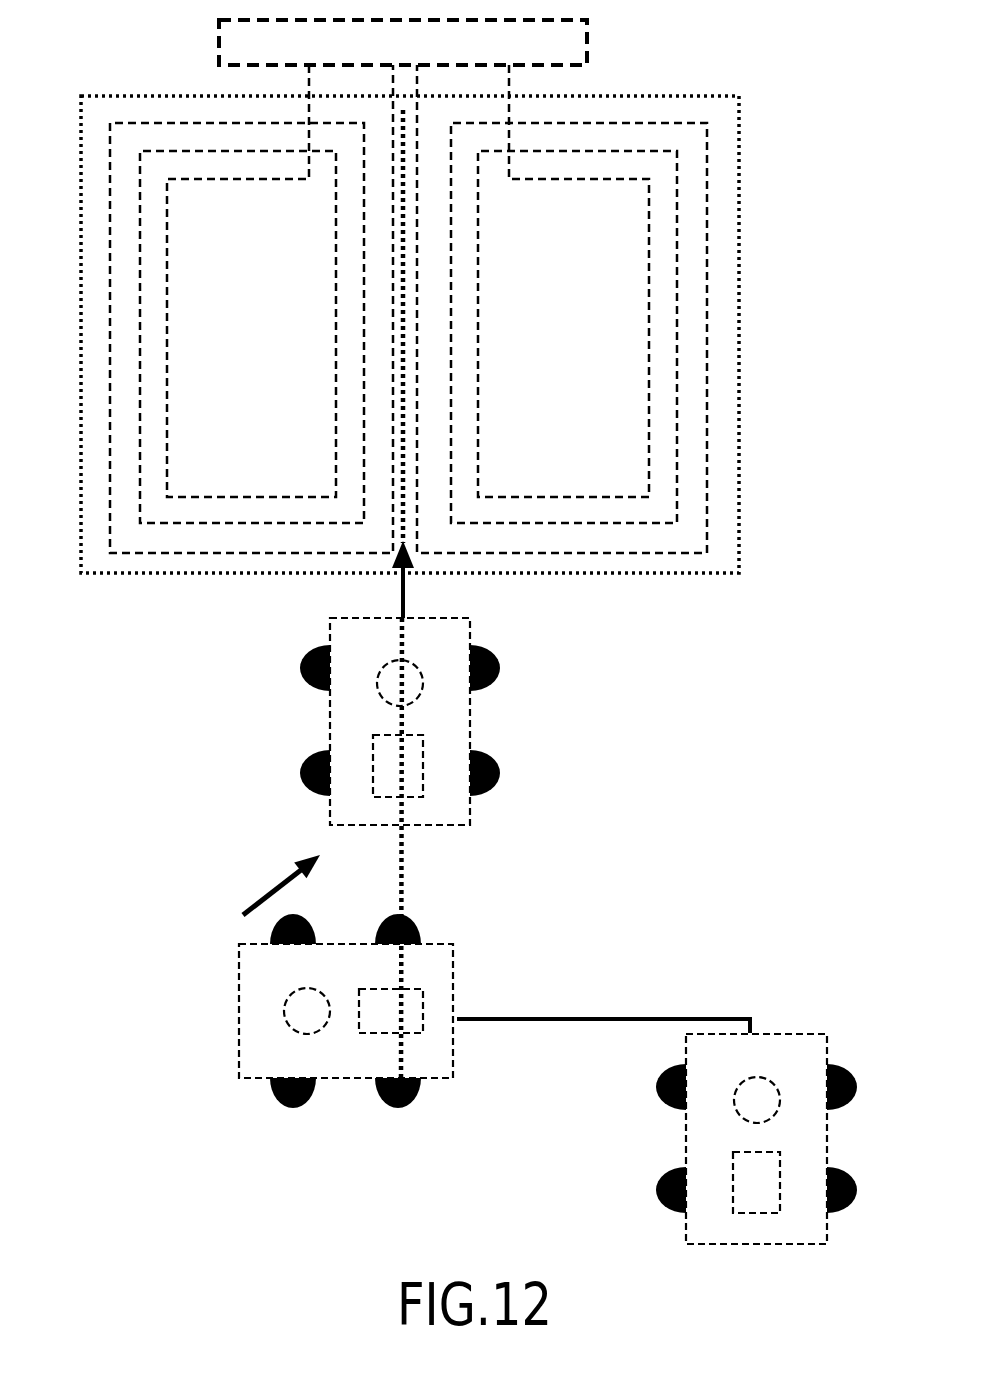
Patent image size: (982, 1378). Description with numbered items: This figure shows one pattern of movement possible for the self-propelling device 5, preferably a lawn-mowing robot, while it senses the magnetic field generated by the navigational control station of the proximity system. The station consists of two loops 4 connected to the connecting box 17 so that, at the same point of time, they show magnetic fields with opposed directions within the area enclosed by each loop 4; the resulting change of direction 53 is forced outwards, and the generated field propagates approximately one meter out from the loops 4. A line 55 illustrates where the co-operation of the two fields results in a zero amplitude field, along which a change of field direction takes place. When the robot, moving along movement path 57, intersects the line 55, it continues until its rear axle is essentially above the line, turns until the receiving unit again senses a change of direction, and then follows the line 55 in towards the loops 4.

The connecting box 17 is at (589, 50).
The change of direction 53 is at (740, 202).
The loops 4 is at (707, 284).
The line 55 is at (402, 880).
The movement path 57 is at (577, 1017).
The self-propelling device 5 is at (766, 1053).